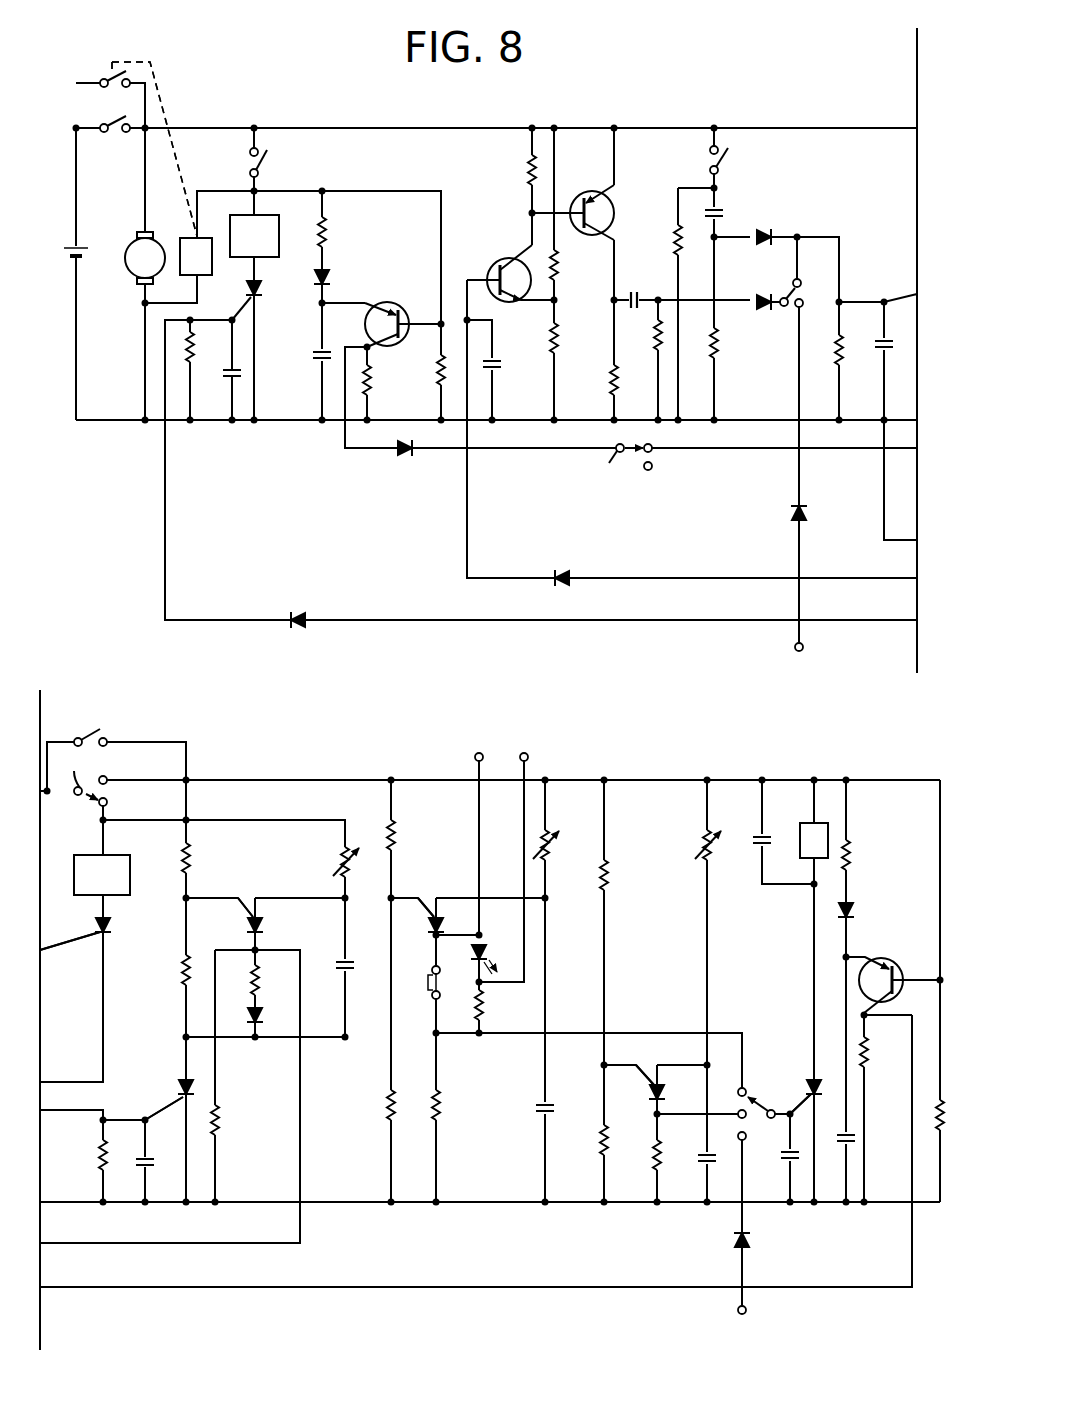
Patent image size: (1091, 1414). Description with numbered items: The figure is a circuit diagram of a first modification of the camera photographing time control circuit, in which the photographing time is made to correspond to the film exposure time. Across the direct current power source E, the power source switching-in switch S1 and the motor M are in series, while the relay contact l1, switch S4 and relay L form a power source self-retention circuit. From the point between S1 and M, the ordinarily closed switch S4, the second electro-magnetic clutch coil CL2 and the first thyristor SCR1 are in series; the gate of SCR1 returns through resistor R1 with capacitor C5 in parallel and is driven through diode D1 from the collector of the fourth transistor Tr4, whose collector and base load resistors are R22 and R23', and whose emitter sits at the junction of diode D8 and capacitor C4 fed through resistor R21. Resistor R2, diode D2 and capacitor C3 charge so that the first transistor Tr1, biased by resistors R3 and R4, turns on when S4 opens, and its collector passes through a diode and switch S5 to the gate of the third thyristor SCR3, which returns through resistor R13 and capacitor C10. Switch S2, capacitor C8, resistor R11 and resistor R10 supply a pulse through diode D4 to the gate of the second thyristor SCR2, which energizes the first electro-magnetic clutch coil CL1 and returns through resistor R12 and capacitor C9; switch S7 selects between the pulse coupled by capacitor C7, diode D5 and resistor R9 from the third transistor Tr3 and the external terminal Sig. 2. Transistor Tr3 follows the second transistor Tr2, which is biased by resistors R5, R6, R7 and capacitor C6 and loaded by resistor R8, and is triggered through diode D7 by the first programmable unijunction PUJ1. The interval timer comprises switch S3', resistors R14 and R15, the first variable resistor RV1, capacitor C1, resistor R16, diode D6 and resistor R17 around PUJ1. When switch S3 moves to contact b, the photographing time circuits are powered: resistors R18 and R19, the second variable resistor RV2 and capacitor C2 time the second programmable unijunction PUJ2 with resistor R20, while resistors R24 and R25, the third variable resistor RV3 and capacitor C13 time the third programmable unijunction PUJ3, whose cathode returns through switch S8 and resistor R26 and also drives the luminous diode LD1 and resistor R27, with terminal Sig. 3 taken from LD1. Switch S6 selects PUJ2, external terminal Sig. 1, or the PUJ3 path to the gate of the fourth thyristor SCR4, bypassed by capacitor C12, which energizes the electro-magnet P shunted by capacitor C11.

The power source switching-in switch S1 is at (110, 118).
The relay contact l1 is at (154, 136).
The power source E is at (81, 249).
The motor M is at (145, 258).
The relay L is at (196, 256).
The switch S4 is at (266, 155).
The second electro-magnetic clutch coil CL2 is at (264, 211).
The first thyristor SCR1 is at (274, 300).
The resistor R1 is at (204, 347).
The capacitor C5 is at (218, 376).
The resistor R2 is at (336, 232).
The diode D2 is at (338, 274).
The capacitor C3 is at (308, 360).
The first transistor Tr1 is at (403, 313).
The resistor R3 is at (380, 377).
The resistor R4 is at (424, 369).
The second transistor Tr2 is at (510, 267).
The capacitor C6 is at (506, 366).
The resistor R5 is at (515, 170).
The resistor R6 is at (568, 265).
The resistor R7 is at (568, 338).
The third transistor Tr3 is at (610, 212).
The resistor R8 is at (598, 380).
The capacitor C7 is at (634, 289).
The resistor R9 is at (642, 335).
The resistor R10 is at (659, 241).
The switch S2 is at (730, 160).
The capacitor C8 is at (728, 209).
The diode D4 is at (772, 226).
The switch S7 is at (783, 290).
The diode D5 is at (755, 317).
The resistor R11 is at (735, 345).
The resistor R12 is at (824, 356).
The capacitor C9 is at (870, 346).
The switch S5 is at (634, 460).
The diode D7 is at (558, 566).
The diode D1 is at (295, 609).
The external signal input terminal Sig. 2 is at (803, 594).
The switch S3' is at (93, 730).
The switch S3 is at (84, 782).
The first electro-magnetic clutch coil CL1 is at (110, 860).
The second thyristor SCR2 is at (102, 931).
The resistor R14 is at (206, 857).
The resistor R15 is at (166, 970).
The first programmable unijunction PUJ1 is at (247, 903).
The resistor R16 is at (275, 980).
The diode D6 is at (271, 1016).
The first variable resistor RV1 is at (329, 858).
The capacitor C1 is at (357, 964).
The third thyristor SCR3 is at (159, 1090).
The resistor R17 is at (235, 1120).
The resistor R13 is at (84, 1158).
The capacitor C10 is at (162, 1152).
The terminal Sig. 3 is at (501, 744).
The resistor R24 is at (411, 835).
The third programmable unijunction PUJ3 is at (426, 904).
The switch S8 is at (420, 990).
The luminous diode LD1 is at (496, 951).
The resistor R27 is at (499, 1005).
The resistor R25 is at (371, 1105).
The resistor R26 is at (457, 1105).
The capacitor C13 is at (527, 1118).
The third variable resistor RV3 is at (561, 847).
The resistor R18 is at (626, 875).
The resistor R19 is at (585, 1140).
The second programmable unijunction PUJ2 is at (639, 1073).
The resistor R20 is at (635, 1158).
The capacitor C2 is at (692, 1155).
The second variable resistor RV2 is at (685, 841).
The switch S6 is at (748, 1110).
The fourth thyristor SCR4 is at (789, 1088).
The capacitor C12 is at (774, 1164).
The external signal input terminal Sig. 1 is at (735, 1324).
The capacitor C4 is at (835, 1128).
The capacitor C11 is at (779, 829).
The electro-magnet P is at (814, 840).
The resistor R21 is at (866, 855).
The diode D8 is at (862, 911).
The fourth transistor Tr4 is at (879, 976).
The resistor R22 is at (885, 1053).
The resistor R23' is at (906, 1115).